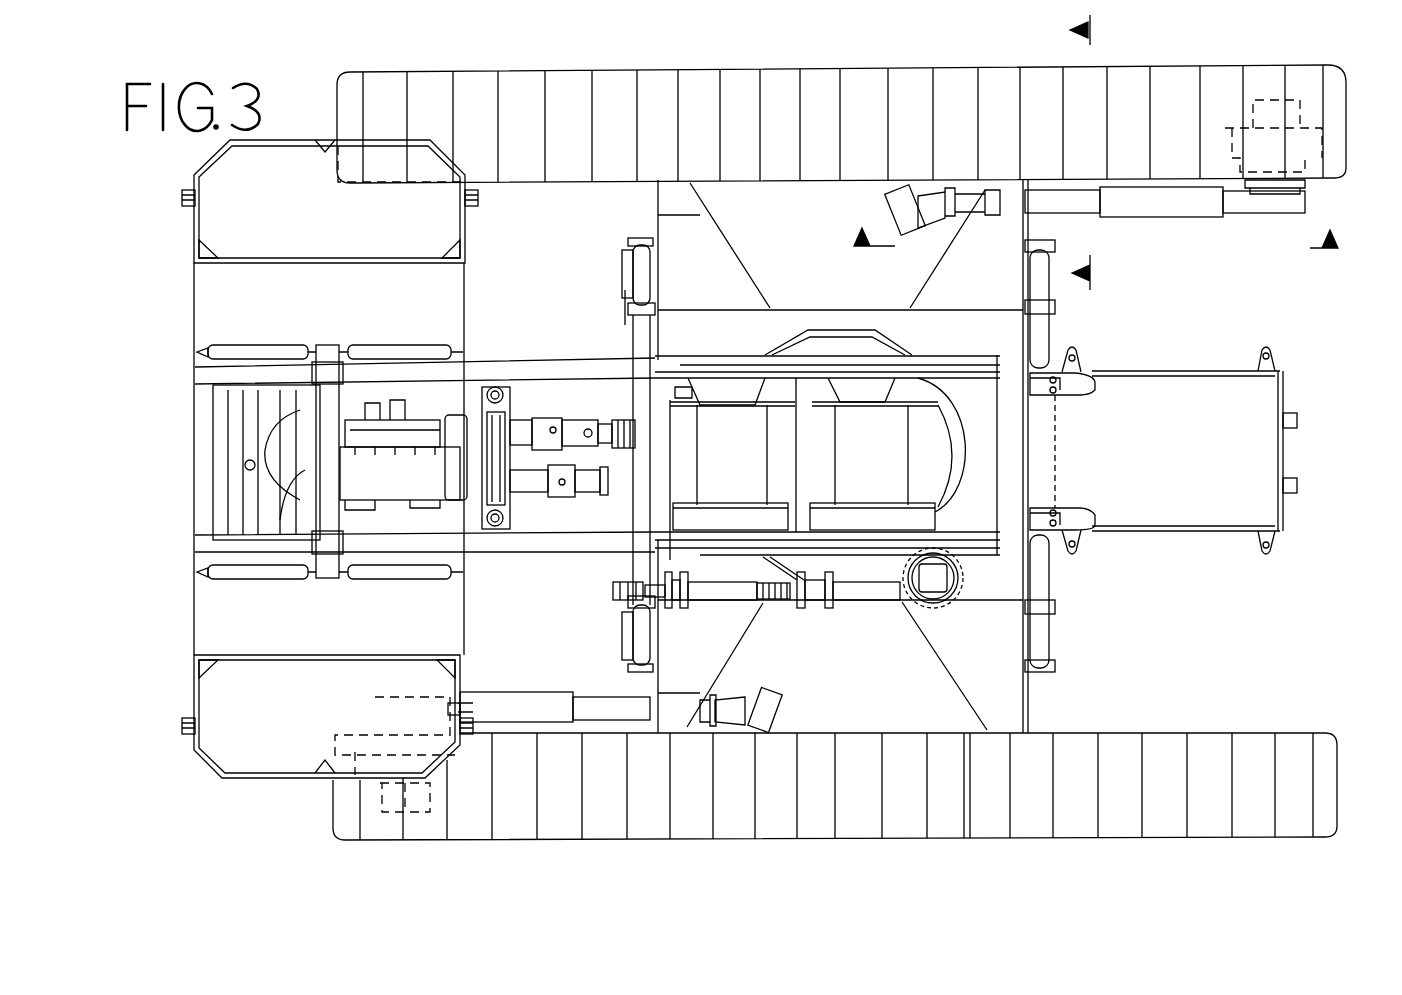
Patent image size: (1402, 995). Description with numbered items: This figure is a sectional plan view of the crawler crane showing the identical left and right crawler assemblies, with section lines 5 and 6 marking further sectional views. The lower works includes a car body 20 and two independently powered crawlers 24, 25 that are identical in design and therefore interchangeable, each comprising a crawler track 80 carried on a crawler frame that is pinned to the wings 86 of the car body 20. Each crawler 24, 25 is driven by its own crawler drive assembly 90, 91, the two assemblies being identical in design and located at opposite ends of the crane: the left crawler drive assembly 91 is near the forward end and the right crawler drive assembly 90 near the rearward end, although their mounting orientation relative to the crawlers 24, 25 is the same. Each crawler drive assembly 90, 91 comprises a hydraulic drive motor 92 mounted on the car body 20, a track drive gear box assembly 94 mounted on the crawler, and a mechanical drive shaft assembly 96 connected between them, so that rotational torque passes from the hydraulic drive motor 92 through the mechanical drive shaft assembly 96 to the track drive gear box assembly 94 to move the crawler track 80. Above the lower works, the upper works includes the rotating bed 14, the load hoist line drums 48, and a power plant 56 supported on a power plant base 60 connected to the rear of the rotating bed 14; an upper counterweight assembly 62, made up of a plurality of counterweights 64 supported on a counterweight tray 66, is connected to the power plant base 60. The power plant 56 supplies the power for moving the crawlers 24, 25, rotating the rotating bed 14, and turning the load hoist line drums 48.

The section line 5 is at (1091, 151).
The section line 6 is at (1092, 252).
The rotating bed 14 is at (977, 513).
The car body 20 is at (1015, 356).
The crawler 24 is at (1116, 838).
The crawler 25 is at (1128, 64).
The load hoist line drum 48 is at (888, 438).
The power plant 56 is at (360, 465).
The power plant base 60 is at (450, 374).
The upper counterweight assembly 62 is at (198, 232).
The counter weight 64 is at (227, 170).
The counter weight tray 66 is at (216, 308).
The crawler track 80 is at (952, 805).
The wing 86 is at (690, 243).
The crawler drive assembly 90 is at (522, 692).
The crawler drive assembly 91 is at (1047, 198).
The hydraulic drive motor 92 is at (930, 192).
The track drive gear box assembly 94 is at (1305, 186).
The mechanical drive shaft assembly 96 is at (1205, 218).